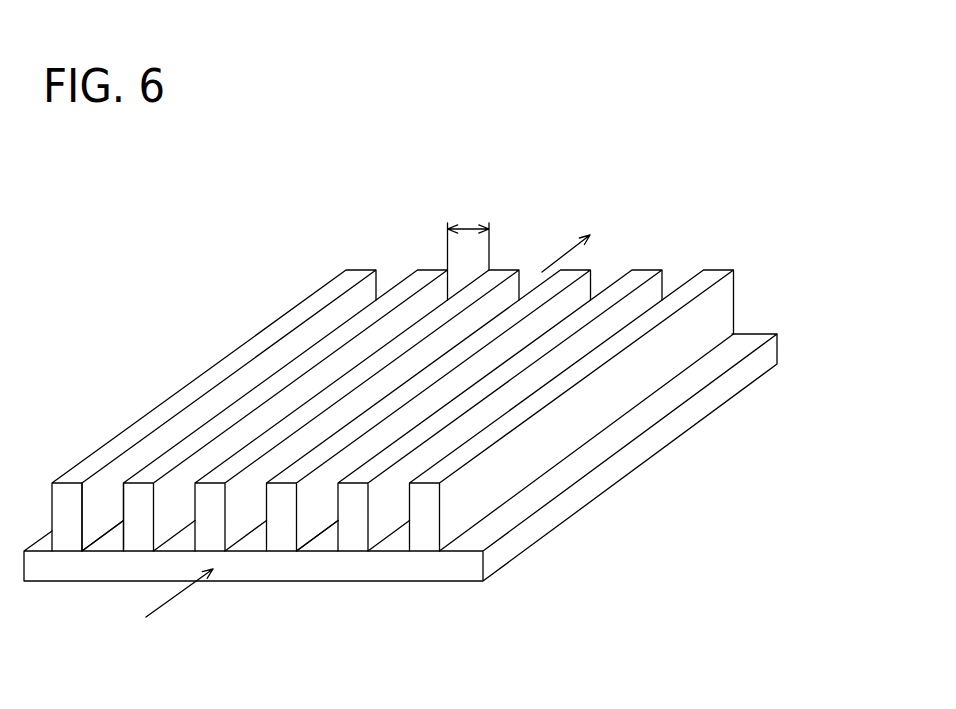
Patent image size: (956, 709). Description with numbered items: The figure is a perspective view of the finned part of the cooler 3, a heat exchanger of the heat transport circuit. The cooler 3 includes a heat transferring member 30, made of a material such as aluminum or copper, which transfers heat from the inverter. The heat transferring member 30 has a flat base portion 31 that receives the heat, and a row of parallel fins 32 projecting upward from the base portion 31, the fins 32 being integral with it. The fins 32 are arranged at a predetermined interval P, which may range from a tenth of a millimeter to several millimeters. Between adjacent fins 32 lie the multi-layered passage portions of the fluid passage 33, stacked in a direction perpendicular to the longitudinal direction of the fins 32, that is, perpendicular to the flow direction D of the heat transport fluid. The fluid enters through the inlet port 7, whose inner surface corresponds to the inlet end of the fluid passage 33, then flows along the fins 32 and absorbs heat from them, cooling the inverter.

The cooler 3 is at (440, 461).
The heat transferring member 30 is at (393, 410).
The base portion 31 is at (63, 562).
The fins 32 is at (145, 473).
The fluid passage 33 is at (94, 515).
The inlet port 7 is at (333, 537).
The predetermined interval P is at (469, 232).
The flow direction D is at (162, 608).